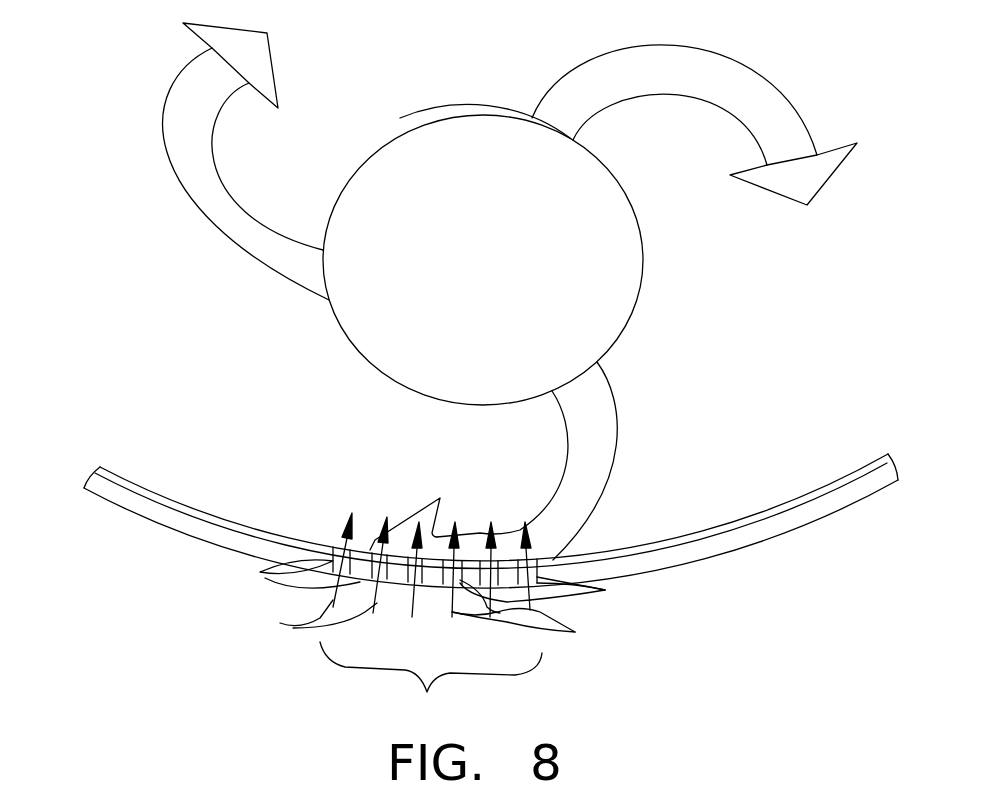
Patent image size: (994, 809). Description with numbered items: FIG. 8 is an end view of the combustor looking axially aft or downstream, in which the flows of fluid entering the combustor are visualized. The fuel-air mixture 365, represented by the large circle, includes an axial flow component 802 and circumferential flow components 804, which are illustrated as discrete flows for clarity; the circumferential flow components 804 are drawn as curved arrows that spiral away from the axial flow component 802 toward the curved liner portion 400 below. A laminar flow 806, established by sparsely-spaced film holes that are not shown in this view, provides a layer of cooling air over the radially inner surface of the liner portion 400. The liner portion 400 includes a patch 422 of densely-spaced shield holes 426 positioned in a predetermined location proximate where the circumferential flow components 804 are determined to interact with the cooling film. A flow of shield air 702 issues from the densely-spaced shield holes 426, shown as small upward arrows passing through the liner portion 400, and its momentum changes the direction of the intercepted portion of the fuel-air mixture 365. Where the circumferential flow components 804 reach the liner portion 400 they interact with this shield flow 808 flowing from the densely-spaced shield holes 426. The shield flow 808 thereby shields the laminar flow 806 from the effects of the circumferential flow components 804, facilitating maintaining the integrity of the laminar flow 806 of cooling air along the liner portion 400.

The fuel-air mixture 365 is at (512, 245).
The liner portion 400 is at (768, 535).
The patch 422 is at (427, 692).
The densely-spaced shield holes 426 is at (435, 583).
The flow of shield air 702 is at (428, 617).
The axial flow component 802 is at (475, 145).
The circumferential flow components 804 is at (203, 93).
The laminar flow 806 is at (820, 507).
The shield flow 808 is at (316, 503).